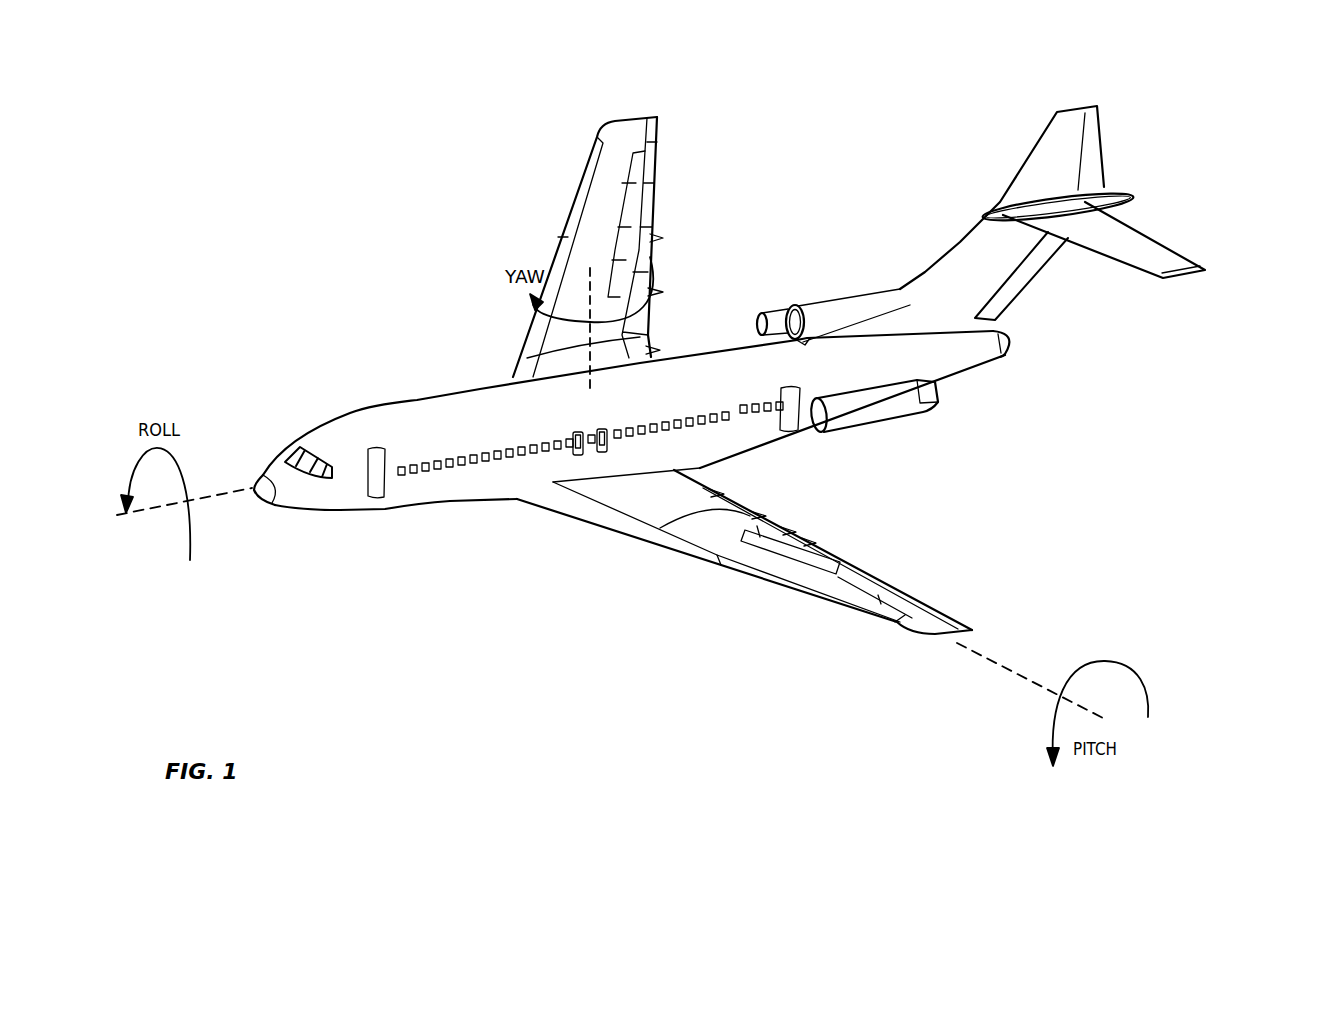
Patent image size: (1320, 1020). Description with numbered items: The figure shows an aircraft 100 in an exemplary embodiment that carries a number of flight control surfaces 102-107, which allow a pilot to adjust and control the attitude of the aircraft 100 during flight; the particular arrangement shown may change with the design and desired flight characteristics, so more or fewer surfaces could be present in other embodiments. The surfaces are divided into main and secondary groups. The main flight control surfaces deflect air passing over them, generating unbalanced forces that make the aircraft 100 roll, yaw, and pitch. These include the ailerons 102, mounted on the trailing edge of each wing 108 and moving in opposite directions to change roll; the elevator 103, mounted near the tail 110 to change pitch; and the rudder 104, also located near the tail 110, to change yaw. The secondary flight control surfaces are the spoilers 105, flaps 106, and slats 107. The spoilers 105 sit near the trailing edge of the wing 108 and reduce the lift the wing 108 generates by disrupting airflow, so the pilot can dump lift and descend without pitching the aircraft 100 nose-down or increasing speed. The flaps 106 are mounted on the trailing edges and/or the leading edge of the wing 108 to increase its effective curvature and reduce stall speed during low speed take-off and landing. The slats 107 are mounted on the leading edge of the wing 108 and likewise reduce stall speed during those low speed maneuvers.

The aircraft 100 is at (378, 664).
The ailerons 102 is at (651, 147).
The elevator 103 is at (1097, 151).
The rudder 104 is at (1043, 258).
The spoilers 105 is at (630, 193).
The flaps 106 is at (577, 203).
The slats 107 is at (540, 326).
The wing 108 is at (625, 107).
The tail 110 is at (1236, 244).